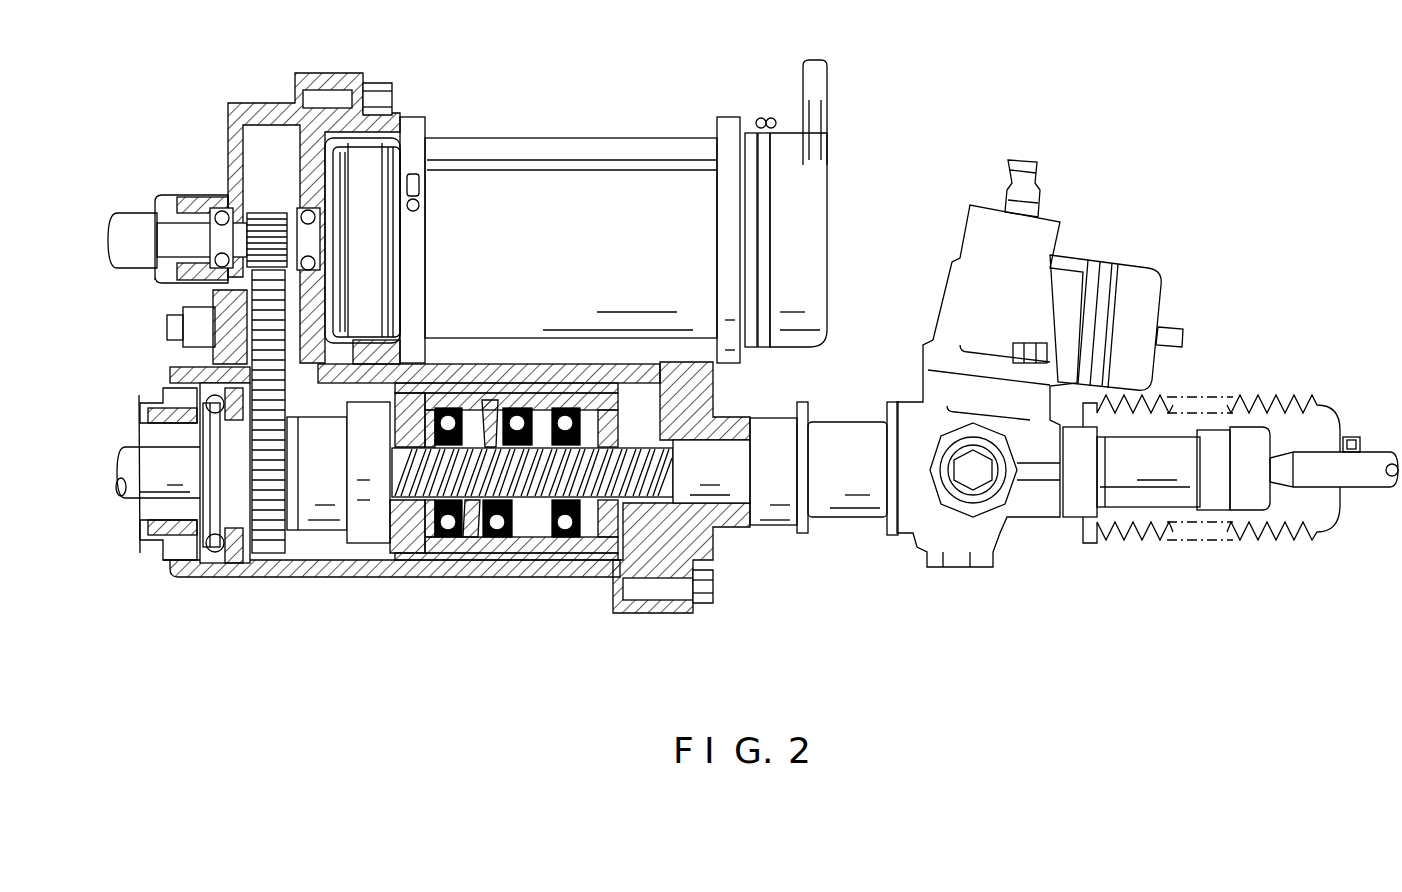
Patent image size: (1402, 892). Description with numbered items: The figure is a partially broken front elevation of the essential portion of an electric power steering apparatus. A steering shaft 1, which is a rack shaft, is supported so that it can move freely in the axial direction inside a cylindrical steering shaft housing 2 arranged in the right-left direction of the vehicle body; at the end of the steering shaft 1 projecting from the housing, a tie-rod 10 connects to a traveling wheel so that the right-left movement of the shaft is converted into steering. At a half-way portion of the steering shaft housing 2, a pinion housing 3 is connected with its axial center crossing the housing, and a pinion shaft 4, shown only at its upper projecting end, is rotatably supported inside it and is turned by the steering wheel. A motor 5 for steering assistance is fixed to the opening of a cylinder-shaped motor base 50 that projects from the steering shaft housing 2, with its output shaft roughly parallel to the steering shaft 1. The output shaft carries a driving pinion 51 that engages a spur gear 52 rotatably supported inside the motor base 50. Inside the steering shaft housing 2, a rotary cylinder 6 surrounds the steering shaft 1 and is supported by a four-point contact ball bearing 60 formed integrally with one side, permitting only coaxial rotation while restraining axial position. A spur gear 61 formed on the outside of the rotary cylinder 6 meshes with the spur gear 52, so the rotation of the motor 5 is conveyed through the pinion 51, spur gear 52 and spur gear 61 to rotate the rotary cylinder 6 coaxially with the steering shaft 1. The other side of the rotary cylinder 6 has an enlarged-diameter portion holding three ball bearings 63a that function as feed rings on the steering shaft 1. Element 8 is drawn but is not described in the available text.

The steering shaft 1 is at (155, 493).
The steering shaft housing 2 is at (778, 513).
The pinion housing 3 is at (948, 297).
The pinion shaft 4 is at (1037, 193).
The motor 5 is at (572, 150).
The rotary cylinder 6 is at (360, 543).
The accumulator 8 is at (1133, 283).
The tie-rod 10 is at (1380, 490).
The motor base 50 is at (228, 113).
The driving pinion 51 is at (273, 210).
The spur gear 52 is at (225, 290).
The 4-point contact ball bearing 60 is at (223, 550).
The spur gear 61 is at (290, 540).
The ball bearing 63a is at (432, 547).